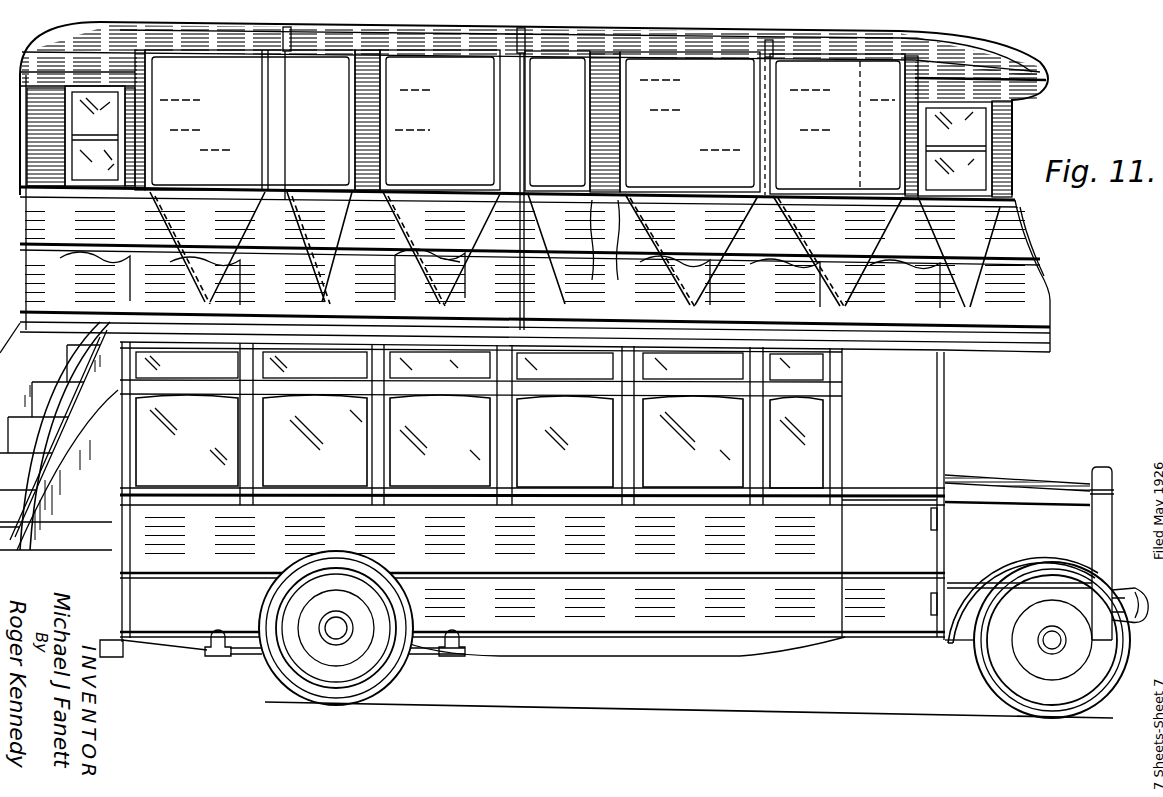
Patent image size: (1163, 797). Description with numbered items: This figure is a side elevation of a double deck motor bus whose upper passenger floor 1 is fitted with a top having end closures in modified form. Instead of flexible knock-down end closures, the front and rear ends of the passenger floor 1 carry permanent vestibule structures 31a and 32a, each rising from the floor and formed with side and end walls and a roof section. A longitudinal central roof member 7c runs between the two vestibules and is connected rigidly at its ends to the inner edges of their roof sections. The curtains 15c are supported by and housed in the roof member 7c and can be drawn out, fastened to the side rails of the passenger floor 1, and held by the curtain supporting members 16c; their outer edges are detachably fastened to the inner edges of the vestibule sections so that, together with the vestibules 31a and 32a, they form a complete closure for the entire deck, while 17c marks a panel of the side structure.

The longitudinal central roof member 7c is at (468, 30).
The rear vestibule structure 32a is at (70, 109).
The front vestibule structure 31a is at (984, 149).
The curtains 15c is at (452, 121).
The curtain supporting members 16c is at (385, 63).
The window panel 17c is at (837, 124).
The passenger floor 1 is at (468, 312).